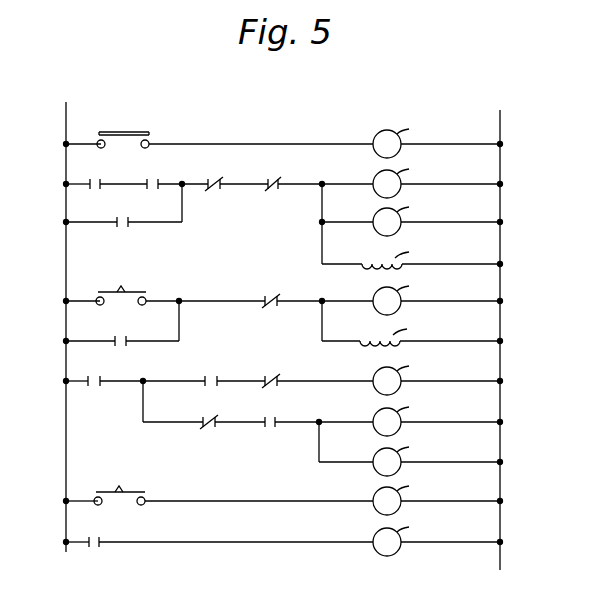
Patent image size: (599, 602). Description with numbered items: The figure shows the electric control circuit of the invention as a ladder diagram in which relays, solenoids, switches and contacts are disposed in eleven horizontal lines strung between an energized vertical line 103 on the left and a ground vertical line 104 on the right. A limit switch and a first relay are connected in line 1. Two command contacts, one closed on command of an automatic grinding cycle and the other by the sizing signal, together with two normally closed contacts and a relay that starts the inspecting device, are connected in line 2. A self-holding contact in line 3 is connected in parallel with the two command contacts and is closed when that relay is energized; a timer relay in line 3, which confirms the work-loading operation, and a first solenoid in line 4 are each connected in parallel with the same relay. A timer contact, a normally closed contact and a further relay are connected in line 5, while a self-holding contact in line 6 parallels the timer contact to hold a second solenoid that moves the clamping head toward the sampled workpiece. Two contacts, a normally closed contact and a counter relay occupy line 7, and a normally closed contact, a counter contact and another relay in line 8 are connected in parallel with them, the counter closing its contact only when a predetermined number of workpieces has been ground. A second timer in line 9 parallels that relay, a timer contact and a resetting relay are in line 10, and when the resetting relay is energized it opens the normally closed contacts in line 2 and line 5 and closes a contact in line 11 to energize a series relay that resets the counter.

The energized vertical line 103 is at (66, 108).
The ground vertical line 104 is at (500, 118).
The line 1 is at (273, 136).
The line 2 is at (273, 180).
The line 3 is at (273, 224).
The line 4 is at (273, 258).
The line 5 is at (273, 295).
The line 6 is at (273, 326).
The line 7 is at (273, 376).
The line 8 is at (273, 408).
The line 9 is at (273, 449).
The line 10 is at (270, 494).
The line 11 is at (270, 538).